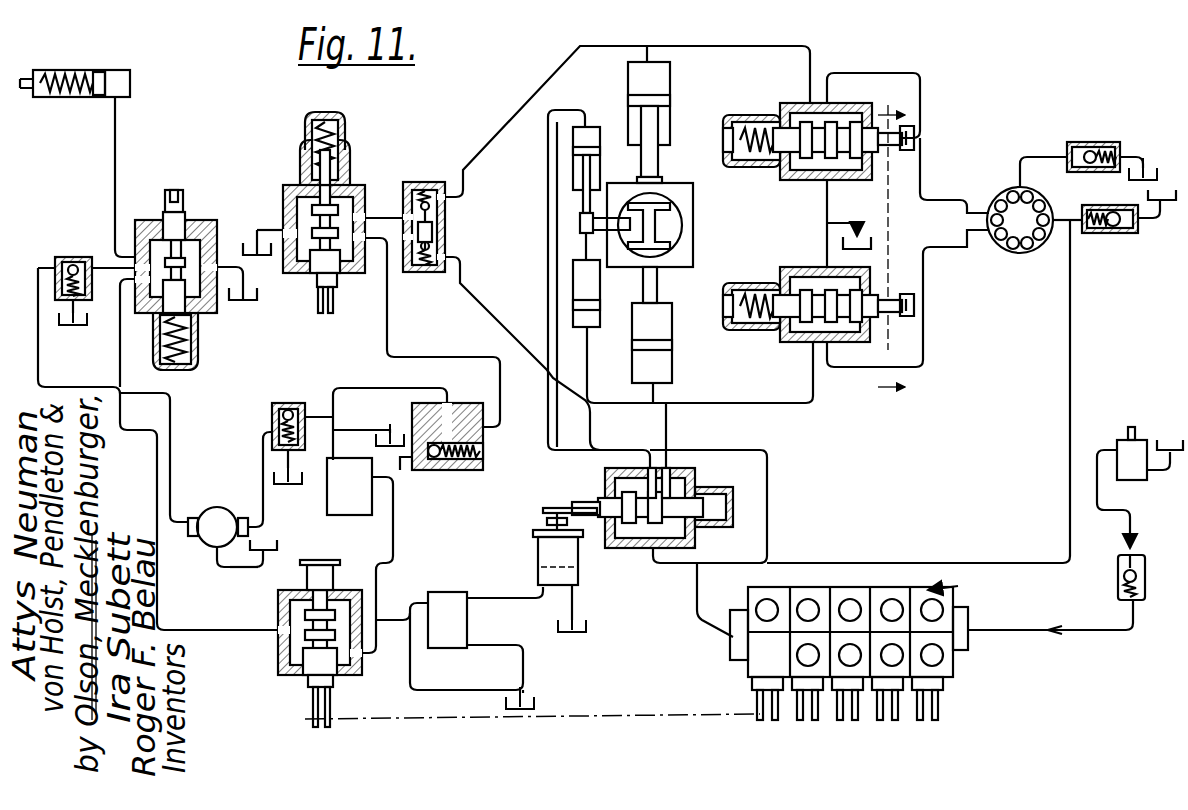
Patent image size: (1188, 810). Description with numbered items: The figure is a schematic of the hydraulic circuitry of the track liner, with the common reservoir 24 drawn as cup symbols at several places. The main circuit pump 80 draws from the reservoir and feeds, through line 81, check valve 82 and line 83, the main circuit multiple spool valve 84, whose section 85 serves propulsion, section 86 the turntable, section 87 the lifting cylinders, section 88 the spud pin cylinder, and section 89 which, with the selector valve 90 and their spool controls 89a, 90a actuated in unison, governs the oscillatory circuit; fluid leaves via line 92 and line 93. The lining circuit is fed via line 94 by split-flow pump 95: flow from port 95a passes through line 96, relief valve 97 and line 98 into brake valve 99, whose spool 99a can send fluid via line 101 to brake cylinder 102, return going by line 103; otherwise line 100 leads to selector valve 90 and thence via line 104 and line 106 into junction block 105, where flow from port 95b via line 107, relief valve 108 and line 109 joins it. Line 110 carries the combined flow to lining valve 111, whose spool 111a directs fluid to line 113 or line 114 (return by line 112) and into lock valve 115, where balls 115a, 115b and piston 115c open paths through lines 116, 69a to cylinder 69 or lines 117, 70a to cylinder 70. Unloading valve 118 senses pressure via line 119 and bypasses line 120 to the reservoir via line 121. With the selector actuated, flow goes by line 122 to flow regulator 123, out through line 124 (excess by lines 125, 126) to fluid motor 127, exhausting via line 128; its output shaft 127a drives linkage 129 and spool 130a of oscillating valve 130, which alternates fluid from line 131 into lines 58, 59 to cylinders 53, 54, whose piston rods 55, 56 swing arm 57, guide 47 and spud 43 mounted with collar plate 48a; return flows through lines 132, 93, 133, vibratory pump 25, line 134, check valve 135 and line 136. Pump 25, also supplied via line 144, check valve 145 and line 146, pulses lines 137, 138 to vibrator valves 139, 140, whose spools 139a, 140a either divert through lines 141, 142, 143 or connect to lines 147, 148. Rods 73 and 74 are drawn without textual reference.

The reservoir 24 is at (1160, 437).
The vibratory pump 25 is at (1005, 190).
The spud 43 is at (663, 252).
The guide 47 is at (673, 223).
The collar plate 48a is at (682, 190).
The hydraulic cylinder 53 is at (602, 297).
The hydraulic cylinder 54 is at (600, 160).
The piston rod 55 is at (580, 247).
The piston rod 56 is at (583, 207).
The arm 57 is at (607, 223).
The hydraulic line 58 is at (602, 392).
The hydraulic line 59 is at (567, 108).
The cylinder 69 is at (672, 357).
The line 69a is at (655, 398).
The cylinder 70 is at (672, 85).
The line 70a is at (650, 45).
The piston rod 73 is at (670, 297).
The piston rod 74 is at (657, 120).
The main circuit pump 80 is at (1118, 440).
The line 81 is at (1132, 503).
The check valve 82 is at (1146, 572).
The line 83 is at (1100, 633).
The main circuit multiple spool valve 84 is at (960, 580).
The section 85 is at (955, 670).
The section 86 is at (920, 715).
The section 87 is at (870, 715).
The section 88 is at (830, 715).
The section 89 is at (790, 715).
The spool control 89a is at (757, 718).
The selector valve 90 is at (350, 582).
The spool control 90a is at (320, 727).
The line 92 is at (697, 608).
The line 93 is at (1072, 385).
The line 94 is at (238, 572).
The split-flow pump 95 is at (203, 512).
The port 95a is at (200, 552).
The port 95b is at (260, 505).
The line 96 is at (172, 447).
The relief valve 97 is at (57, 256).
The line 98 is at (105, 262).
The brake valve 99 is at (143, 218).
The spool 99a is at (183, 197).
The line 100 is at (117, 375).
The line 101 is at (120, 104).
The brake cylinder 102 is at (128, 68).
The line 103 is at (245, 300).
The line 104 is at (397, 538).
The junction block 105 is at (485, 428).
The line 106 is at (400, 462).
The line 107 is at (272, 428).
The relief valve 108 is at (288, 403).
The line 109 is at (347, 413).
The line 110 is at (415, 325).
The lining valve 111 is at (390, 176).
The spool 111a is at (340, 316).
The line 112 is at (263, 228).
The line 113 is at (425, 272).
The line 114 is at (383, 212).
The lock valve 115 is at (437, 222).
The ball 115a is at (460, 258).
The ball 115b is at (447, 198).
The piston 115c is at (432, 232).
The line 116 is at (497, 328).
The line 117 is at (527, 100).
The unloading valve 118 is at (341, 504).
The line 119 is at (360, 382).
The line 120 is at (382, 480).
The line 121 is at (361, 442).
The line 122 is at (365, 672).
The flow regulator 123 is at (432, 592).
The line 124 is at (505, 610).
The line 125 is at (466, 653).
The line 126 is at (440, 683).
The fluid motor and speed reducer 127 is at (538, 563).
The output shaft 127a is at (547, 523).
The line 128 is at (575, 598).
The mechanical linkage 129 is at (562, 510).
The oscillating valve 130 is at (695, 473).
The spool 130a is at (583, 493).
The line 131 is at (770, 505).
The line 132 is at (673, 563).
The line 133 is at (1058, 227).
The line 134 is at (1033, 155).
The check valve 135 is at (1088, 140).
The line 136 is at (1129, 152).
The line 137 is at (923, 325).
The line 138 is at (923, 125).
The vibrator valve 139 is at (848, 347).
The spool 139a is at (903, 300).
The vibrator valve 140 is at (843, 180).
The spool 140a is at (905, 145).
The line 141 is at (827, 240).
The line 142 is at (823, 195).
The line 143 is at (853, 223).
The line 144 is at (1157, 233).
The check valve 145 is at (1088, 234).
The line 146 is at (1086, 236).
The line 147 is at (783, 408).
The line 148 is at (776, 45).